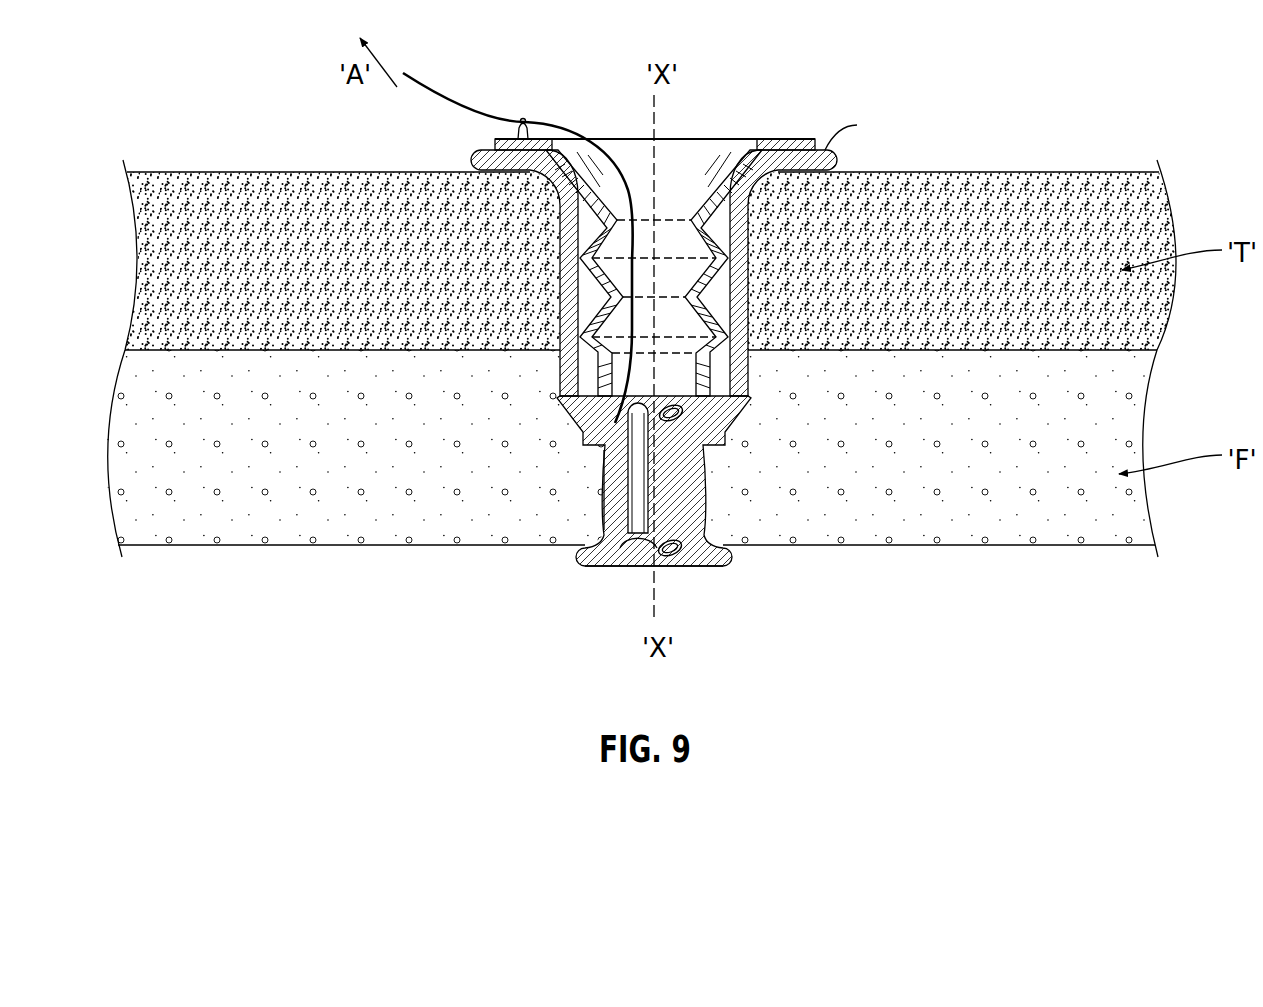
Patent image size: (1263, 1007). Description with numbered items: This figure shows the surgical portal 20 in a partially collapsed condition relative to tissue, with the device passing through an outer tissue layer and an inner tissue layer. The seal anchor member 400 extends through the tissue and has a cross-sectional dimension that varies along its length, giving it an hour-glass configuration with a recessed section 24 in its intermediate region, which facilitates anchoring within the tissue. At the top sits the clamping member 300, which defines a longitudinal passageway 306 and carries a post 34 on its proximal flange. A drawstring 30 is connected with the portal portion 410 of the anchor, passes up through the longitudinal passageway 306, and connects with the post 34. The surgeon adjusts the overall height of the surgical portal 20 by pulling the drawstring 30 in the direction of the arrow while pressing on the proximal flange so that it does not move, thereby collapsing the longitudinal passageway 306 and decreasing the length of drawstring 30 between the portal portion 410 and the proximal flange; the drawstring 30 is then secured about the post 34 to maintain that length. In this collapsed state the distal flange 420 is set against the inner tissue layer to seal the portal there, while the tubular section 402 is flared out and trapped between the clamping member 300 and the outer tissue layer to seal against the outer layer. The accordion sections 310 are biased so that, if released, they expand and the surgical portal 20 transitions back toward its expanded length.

The surgical portal 20 is at (1103, 75).
The recessed section 24 is at (598, 498).
The drawstring 30 is at (433, 92).
The post 34 is at (524, 118).
The clamping member 300 is at (802, 140).
The longitudinal passageway 306 is at (699, 138).
The accordion sections 310 is at (722, 247).
The seal anchor member 400 is at (621, 590).
The tubular section 402 is at (560, 237).
The portal portion 410 is at (747, 420).
The distal flange 420 is at (730, 560).